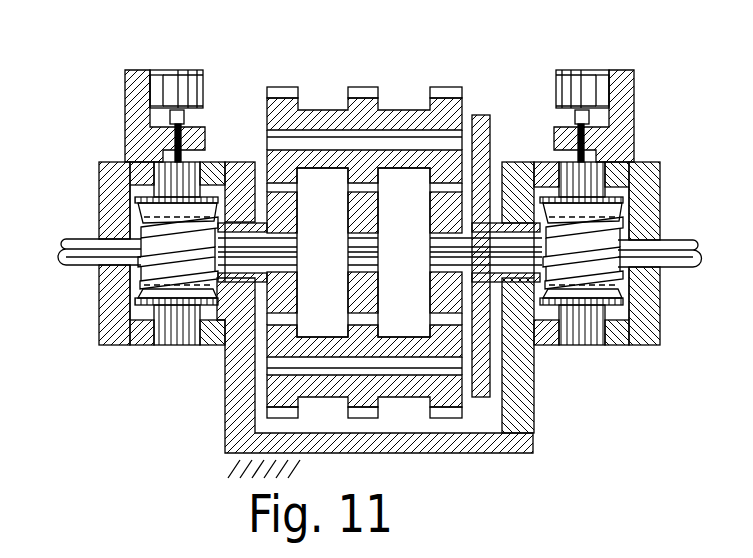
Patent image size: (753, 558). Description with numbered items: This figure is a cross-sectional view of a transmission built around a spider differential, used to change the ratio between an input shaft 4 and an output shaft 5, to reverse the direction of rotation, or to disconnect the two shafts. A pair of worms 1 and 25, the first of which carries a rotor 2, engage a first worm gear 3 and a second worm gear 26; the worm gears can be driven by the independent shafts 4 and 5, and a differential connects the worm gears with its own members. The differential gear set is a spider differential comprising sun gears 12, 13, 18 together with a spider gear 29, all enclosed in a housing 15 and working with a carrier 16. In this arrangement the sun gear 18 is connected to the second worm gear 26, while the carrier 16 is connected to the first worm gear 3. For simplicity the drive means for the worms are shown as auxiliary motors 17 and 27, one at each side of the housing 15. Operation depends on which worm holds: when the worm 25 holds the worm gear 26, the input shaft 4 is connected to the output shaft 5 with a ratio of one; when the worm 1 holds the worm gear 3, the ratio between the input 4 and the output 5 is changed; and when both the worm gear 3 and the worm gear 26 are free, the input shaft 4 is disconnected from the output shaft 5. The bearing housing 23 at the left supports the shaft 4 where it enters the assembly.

The worm 1 is at (598, 215).
The rotor 2 is at (572, 290).
The first worm gear 3 is at (645, 333).
The input shaft 4 is at (102, 247).
The output shaft 5 is at (657, 248).
The sun gear 12 is at (380, 216).
The sun gear 13 is at (454, 193).
The housing 15 is at (226, 381).
The carrier 16 is at (492, 160).
The auxiliary motor 17 is at (582, 90).
The sun gear 18 is at (272, 192).
The left bearing housing 23 is at (112, 330).
The worm 25 is at (160, 212).
The second worm gear 26 is at (189, 292).
The auxiliary motor 27 is at (160, 88).
The spider gear 29 is at (375, 130).